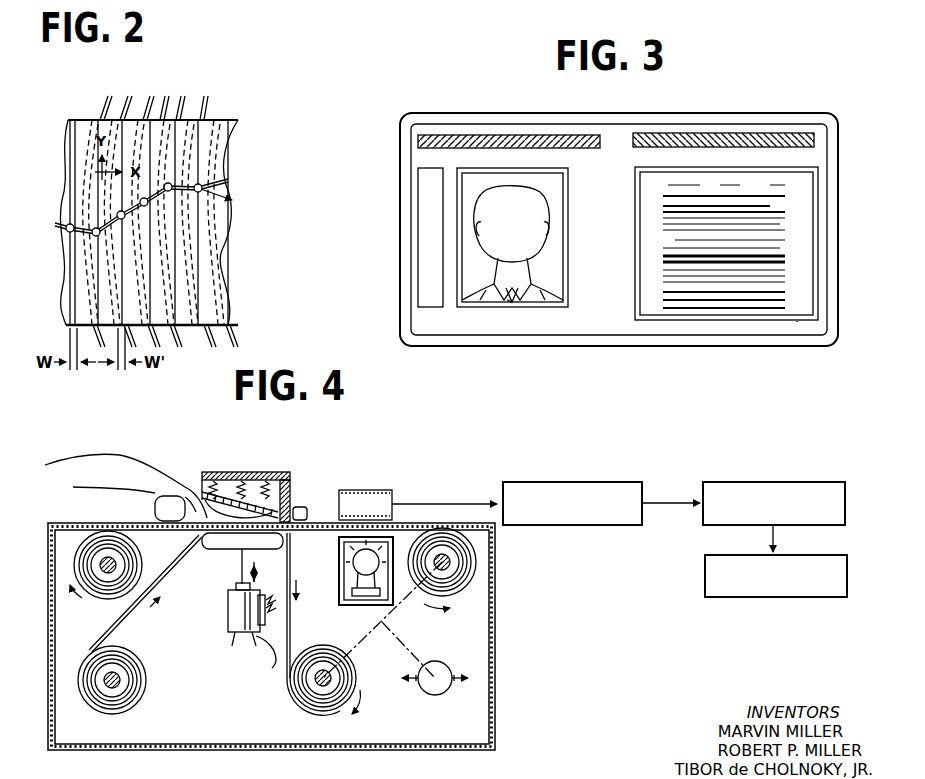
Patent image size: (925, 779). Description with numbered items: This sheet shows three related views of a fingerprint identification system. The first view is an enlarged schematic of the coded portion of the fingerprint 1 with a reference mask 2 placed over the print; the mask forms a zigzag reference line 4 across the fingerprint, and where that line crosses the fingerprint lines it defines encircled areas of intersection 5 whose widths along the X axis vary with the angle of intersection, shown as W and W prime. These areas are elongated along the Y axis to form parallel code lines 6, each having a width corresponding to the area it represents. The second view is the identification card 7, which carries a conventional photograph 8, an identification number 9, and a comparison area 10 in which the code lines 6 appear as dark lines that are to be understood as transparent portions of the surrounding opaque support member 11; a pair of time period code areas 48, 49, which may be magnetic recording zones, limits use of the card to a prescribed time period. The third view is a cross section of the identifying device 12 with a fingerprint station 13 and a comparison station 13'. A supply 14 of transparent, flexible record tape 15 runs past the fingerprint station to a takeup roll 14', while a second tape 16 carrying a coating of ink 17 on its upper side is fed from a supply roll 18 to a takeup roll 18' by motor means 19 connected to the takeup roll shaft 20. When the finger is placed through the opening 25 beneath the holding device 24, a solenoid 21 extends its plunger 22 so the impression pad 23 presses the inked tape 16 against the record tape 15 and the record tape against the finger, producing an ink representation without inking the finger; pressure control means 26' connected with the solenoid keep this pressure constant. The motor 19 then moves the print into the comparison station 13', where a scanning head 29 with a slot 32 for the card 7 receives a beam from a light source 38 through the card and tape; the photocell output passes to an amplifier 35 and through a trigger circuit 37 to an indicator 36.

In FIG. 2, the coded portion of the fingerprint 1 is at (106, 120).
In FIG. 2, the reference mask 2 is at (212, 128).
In FIG. 2, the reference line 4 is at (208, 192).
In FIG. 2, the areas of intersection 5 is at (94, 231).
In FIG. 2, the code lines 6 is at (97, 296).
In FIG. 3, the code lines 6 is at (702, 304).
In FIG. 3, the identification card 7 is at (606, 210).
In FIG. 3, the photograph 8 is at (568, 283).
In FIG. 3, the identification number 9 is at (418, 185).
In FIG. 3, the comparison area 10 is at (797, 322).
In FIG. 3, the support member 11 is at (753, 266).
In FIG. 4, the identifying device 12 is at (300, 752).
In FIG. 4, the fingerprint station 13 is at (237, 441).
In FIG. 4, the comparison station 13' is at (426, 459).
In FIG. 4, the supply of record tape 14 is at (79, 565).
In FIG. 4, the takeup roll 14' is at (474, 568).
In FIG. 4, the record tape 15 is at (180, 538).
In FIG. 4, the second tape 16 is at (130, 616).
In FIG. 4, the coating of ink 17 is at (112, 636).
In FIG. 4, the supply roll 18 is at (130, 680).
In FIG. 4, the takeup roll 18' is at (343, 679).
In FIG. 4, the motor means 19 is at (438, 695).
In FIG. 4, the takeup roll shaft 20 is at (312, 686).
In FIG. 4, the solenoid 21 is at (228, 620).
In FIG. 4, the plunger 22 is at (238, 580).
In FIG. 4, the impression pad 23 is at (240, 555).
In FIG. 4, the holding device 24 is at (284, 470).
In FIG. 4, the opening 25 is at (207, 502).
In FIG. 4, the pressure control means 26' is at (259, 636).
In FIG. 4, the scanning head 29 is at (404, 493).
In FIG. 4, the slot 32 is at (346, 512).
In FIG. 4, the amplifier 35 is at (607, 482).
In FIG. 4, the indicator 36 is at (705, 576).
In FIG. 4, the trigger circuit 37 is at (805, 482).
In FIG. 4, the light source 38 is at (360, 578).
In FIG. 3, the time period code area 48 is at (530, 138).
In FIG. 3, the time period code area 49 is at (664, 137).